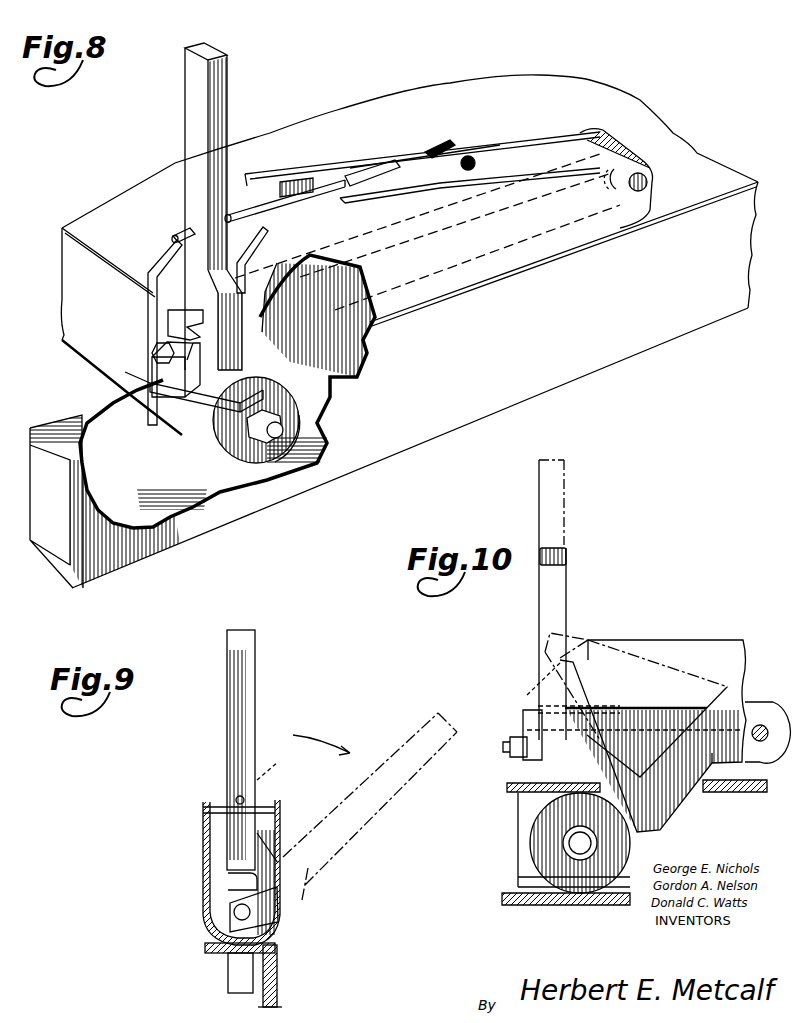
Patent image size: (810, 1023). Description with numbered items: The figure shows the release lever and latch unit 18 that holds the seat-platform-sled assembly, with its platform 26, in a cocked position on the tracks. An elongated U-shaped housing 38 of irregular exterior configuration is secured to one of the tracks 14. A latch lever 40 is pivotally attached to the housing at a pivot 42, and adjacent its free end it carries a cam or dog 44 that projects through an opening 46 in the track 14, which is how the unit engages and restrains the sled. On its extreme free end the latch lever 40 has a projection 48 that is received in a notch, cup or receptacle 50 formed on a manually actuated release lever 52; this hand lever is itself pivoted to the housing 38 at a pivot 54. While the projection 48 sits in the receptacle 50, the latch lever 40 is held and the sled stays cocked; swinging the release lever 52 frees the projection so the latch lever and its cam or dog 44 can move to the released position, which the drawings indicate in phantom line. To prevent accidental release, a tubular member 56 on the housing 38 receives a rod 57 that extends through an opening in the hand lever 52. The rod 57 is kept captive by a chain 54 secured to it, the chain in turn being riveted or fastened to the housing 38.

In FIG. 8, the track 14 is at (132, 562).
In FIG. 9, the track 14 is at (278, 980).
In FIG. 10, the track 14 is at (525, 897).
In FIG. 8, the release lever and latch unit 18 is at (342, 157).
In FIG. 8, the platform 26 is at (90, 333).
In FIG. 8, the U-shaped housing 38 is at (520, 158).
In FIG. 9, the U-shaped housing 38 is at (278, 823).
In FIG. 10, the U-shaped housing 38 is at (690, 650).
In FIG. 8, the latch lever 40 is at (622, 140).
In FIG. 10, the latch lever 40 is at (760, 703).
In FIG. 8, the pivot 42 is at (650, 185).
In FIG. 10, the pivot 42 is at (780, 763).
In FIG. 8, the cam or dog 44 is at (320, 370).
In FIG. 9, the cam or dog 44 is at (228, 975).
In FIG. 10, the cam or dog 44 is at (670, 824).
In FIG. 8, the opening 46 is at (393, 318).
In FIG. 10, the opening 46 is at (700, 795).
In FIG. 8, the projection 48 is at (168, 313).
In FIG. 9, the projection 48 is at (235, 880).
In FIG. 10, the projection 48 is at (538, 712).
In FIG. 8, the notch, cup or receptacle 50 is at (165, 337).
In FIG. 9, the notch, cup or receptacle 50 is at (280, 892).
In FIG. 8, the release lever 52 is at (215, 170).
In FIG. 9, the release lever 52 is at (258, 722).
In FIG. 10, the release lever 52 is at (565, 612).
In FIG. 8, the pivot / chain 54 is at (150, 358).
In FIG. 9, the pivot / chain 54 is at (234, 912).
In FIG. 10, the pivot / chain 54 is at (510, 748).
In FIG. 8, the tubular member 56 is at (290, 185).
In FIG. 9, the tubular member 56 is at (278, 785).
In FIG. 8, the rod 57 is at (182, 234).
In FIG. 9, the rod 57 is at (236, 800).